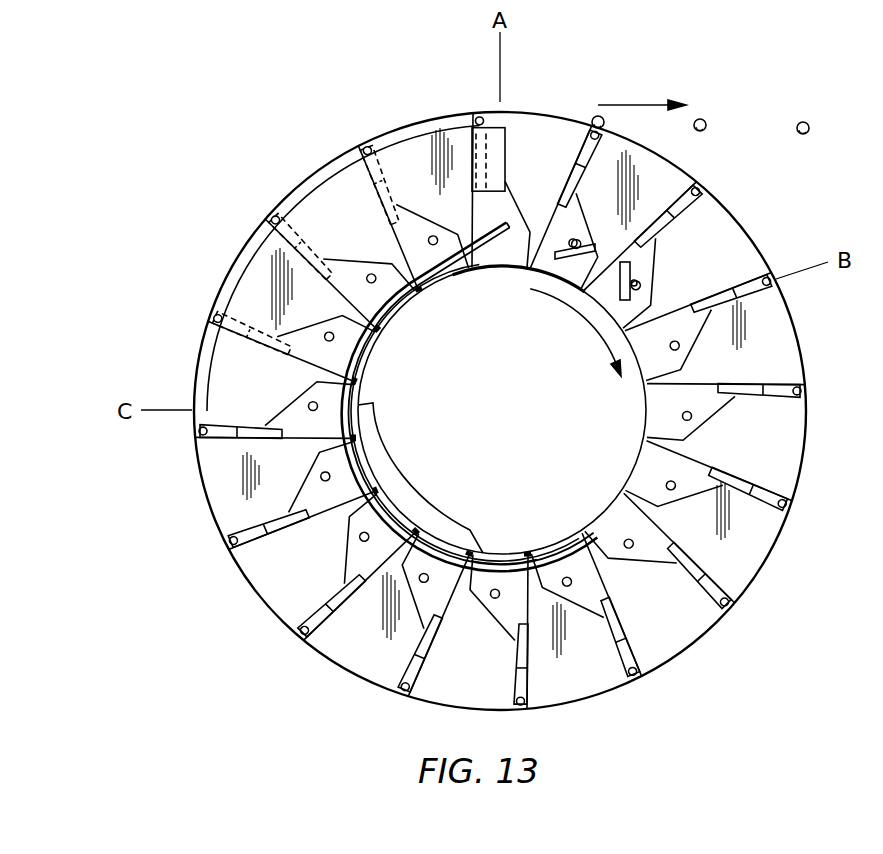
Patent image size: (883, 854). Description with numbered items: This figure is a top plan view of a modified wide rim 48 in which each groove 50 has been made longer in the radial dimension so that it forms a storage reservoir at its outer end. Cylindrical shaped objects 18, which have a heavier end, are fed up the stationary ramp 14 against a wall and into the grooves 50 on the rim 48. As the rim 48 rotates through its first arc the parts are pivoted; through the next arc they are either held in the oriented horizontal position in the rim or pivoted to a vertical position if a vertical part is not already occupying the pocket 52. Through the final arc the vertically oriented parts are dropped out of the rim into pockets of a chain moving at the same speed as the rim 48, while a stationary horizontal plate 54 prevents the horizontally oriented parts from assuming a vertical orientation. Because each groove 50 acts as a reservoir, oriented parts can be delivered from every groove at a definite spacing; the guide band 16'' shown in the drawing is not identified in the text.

The stationary ramp 14 is at (452, 528).
The guide band 16'' is at (470, 397).
The cylindrical shaped objects 18 is at (777, 384).
The modified wide rim 48 is at (788, 446).
The grooves 50 is at (675, 320).
The pocket 52 is at (728, 606).
The stationary horizontal plate 54 is at (262, 293).